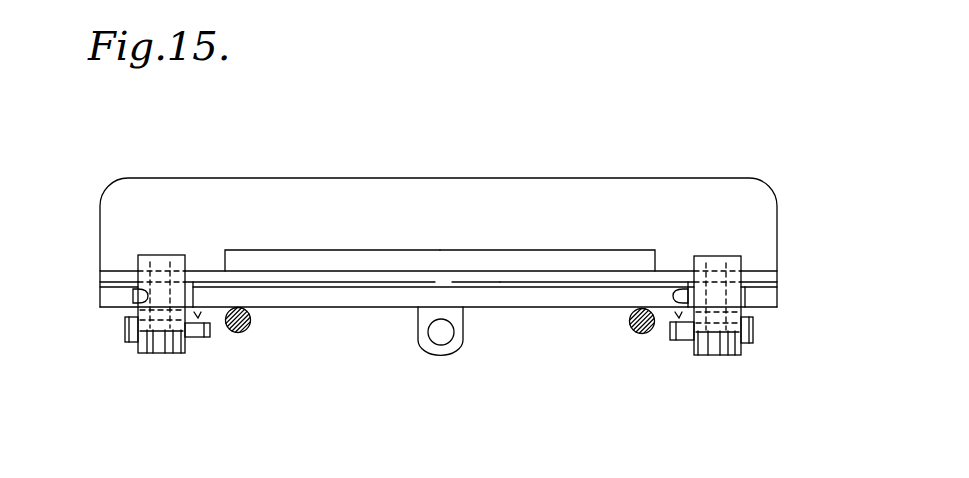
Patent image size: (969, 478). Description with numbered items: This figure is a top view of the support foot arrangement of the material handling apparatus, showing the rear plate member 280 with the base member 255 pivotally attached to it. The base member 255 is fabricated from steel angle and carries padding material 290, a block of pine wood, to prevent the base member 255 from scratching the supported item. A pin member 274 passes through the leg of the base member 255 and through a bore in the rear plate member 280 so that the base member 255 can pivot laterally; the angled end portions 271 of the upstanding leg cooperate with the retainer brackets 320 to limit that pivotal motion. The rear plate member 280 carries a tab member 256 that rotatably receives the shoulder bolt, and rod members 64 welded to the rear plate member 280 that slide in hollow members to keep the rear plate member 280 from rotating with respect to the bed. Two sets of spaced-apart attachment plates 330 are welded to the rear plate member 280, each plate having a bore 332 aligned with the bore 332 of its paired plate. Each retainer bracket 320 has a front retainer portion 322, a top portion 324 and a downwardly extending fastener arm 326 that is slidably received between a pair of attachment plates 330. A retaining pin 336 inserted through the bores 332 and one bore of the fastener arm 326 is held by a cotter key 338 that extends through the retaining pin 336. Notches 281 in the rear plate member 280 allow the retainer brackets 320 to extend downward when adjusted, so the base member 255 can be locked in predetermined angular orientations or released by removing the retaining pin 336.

The base member 255 is at (524, 184).
The tab member 256 is at (438, 354).
The angled end portions 271 is at (208, 277).
The pin member 274 is at (438, 282).
The rear plate member 280 is at (487, 300).
The notches 281 is at (136, 293).
The padding material 290 is at (487, 258).
The retainer brackets 320 is at (134, 362).
The front retainer portion 322 is at (160, 258).
The top portion 324 is at (155, 295).
The fastener arm 326 is at (163, 355).
The attachment plates 330 is at (137, 347).
The bore 332 is at (148, 357).
The retaining pin 336 is at (125, 333).
The cotter key 338 is at (200, 343).
The rod members 64 is at (249, 328).